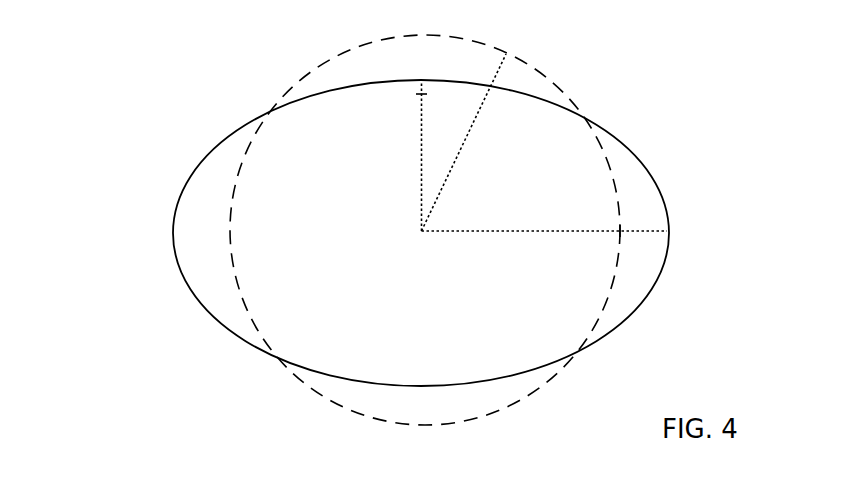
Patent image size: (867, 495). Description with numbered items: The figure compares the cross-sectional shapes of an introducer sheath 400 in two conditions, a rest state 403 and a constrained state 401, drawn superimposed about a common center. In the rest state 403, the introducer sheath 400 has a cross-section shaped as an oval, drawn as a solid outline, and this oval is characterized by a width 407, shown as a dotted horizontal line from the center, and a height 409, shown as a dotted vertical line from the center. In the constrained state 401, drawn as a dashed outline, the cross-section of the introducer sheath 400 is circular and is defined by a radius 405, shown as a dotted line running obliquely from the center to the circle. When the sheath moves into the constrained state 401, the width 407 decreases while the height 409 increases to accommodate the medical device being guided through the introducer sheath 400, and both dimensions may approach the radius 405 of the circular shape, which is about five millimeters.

The introducer sheath 400 is at (120, 86).
The constrained state 401 is at (345, 52).
The rest state 403 is at (192, 173).
The radius 405 is at (467, 137).
The width 407 is at (552, 233).
The height 409 is at (421, 94).